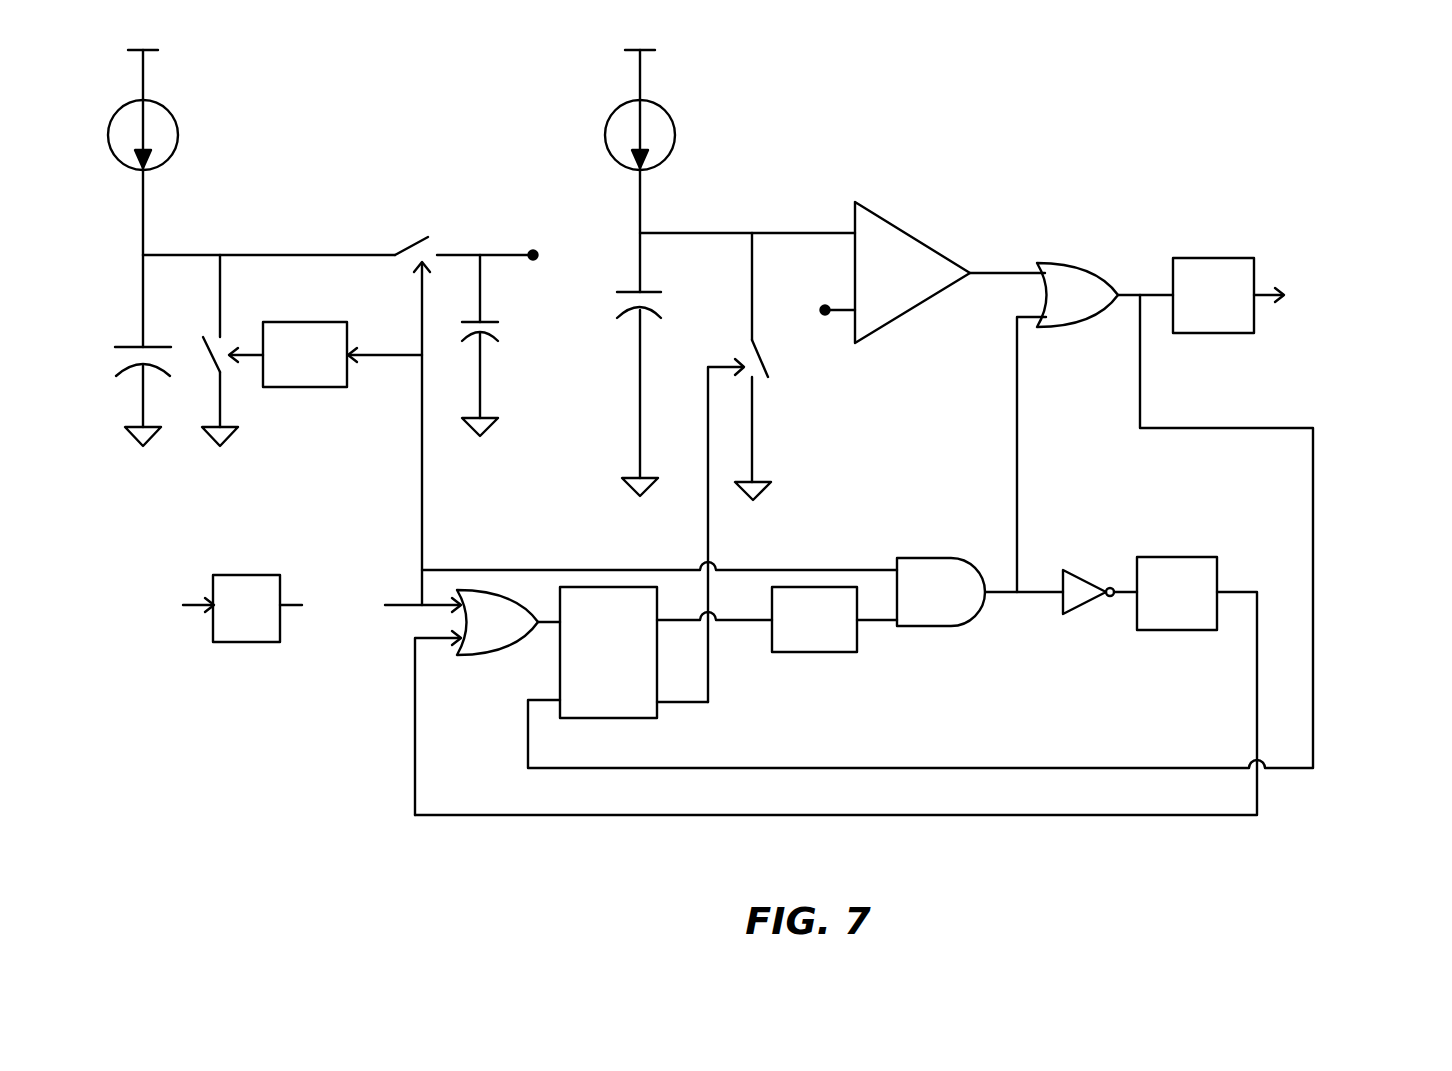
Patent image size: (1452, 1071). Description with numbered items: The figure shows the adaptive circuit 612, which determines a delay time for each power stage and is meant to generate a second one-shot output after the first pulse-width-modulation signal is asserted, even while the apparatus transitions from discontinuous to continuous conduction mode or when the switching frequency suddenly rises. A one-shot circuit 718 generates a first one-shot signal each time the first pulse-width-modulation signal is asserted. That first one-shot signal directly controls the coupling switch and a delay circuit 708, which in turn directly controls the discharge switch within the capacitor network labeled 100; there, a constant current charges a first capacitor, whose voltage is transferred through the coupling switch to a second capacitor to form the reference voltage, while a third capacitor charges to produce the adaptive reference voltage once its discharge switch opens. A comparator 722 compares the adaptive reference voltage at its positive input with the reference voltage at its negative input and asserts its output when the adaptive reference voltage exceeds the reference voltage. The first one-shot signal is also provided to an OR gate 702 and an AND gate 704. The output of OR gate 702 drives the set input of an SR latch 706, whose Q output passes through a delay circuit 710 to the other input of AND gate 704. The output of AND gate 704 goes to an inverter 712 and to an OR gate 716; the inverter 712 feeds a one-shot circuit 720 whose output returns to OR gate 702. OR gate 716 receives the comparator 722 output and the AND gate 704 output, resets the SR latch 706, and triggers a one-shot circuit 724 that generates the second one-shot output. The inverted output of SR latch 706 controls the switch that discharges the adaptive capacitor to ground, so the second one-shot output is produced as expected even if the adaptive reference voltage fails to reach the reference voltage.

The adaptive circuit 612 is at (811, 36).
The reference capacitor circuit 100 is at (347, 327).
The OR gate 702 is at (495, 655).
The AND gate 704 is at (942, 558).
The SR latch 706 is at (591, 661).
The delay circuit 708 is at (310, 322).
The delay circuit 710 is at (817, 652).
The inverter 712 is at (1077, 570).
The OR gate 716 is at (1083, 267).
The one-shot circuit 718 is at (252, 642).
The one-shot circuit 720 is at (1173, 557).
The comparator 722 is at (905, 230).
The one-shot circuit 724 is at (1210, 333).